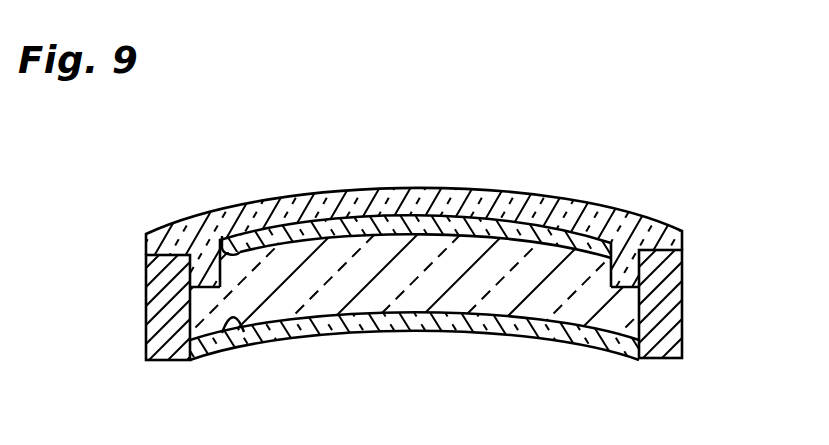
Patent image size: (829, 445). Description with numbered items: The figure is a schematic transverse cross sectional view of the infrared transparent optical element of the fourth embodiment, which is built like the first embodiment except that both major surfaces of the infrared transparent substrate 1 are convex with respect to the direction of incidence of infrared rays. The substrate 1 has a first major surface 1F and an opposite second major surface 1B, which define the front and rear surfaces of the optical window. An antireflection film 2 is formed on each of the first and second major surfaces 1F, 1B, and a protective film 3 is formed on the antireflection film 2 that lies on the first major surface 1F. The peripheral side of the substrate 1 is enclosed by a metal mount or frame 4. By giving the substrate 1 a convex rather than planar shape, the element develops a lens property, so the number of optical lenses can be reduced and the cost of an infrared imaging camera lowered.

The infrared transparent substrate 1 is at (293, 293).
The first major surface 1F is at (228, 246).
The second major surface 1B is at (222, 350).
The antireflection film 2 is at (257, 238).
The protective film 3 is at (453, 208).
The metal mount or frame 4 is at (165, 336).